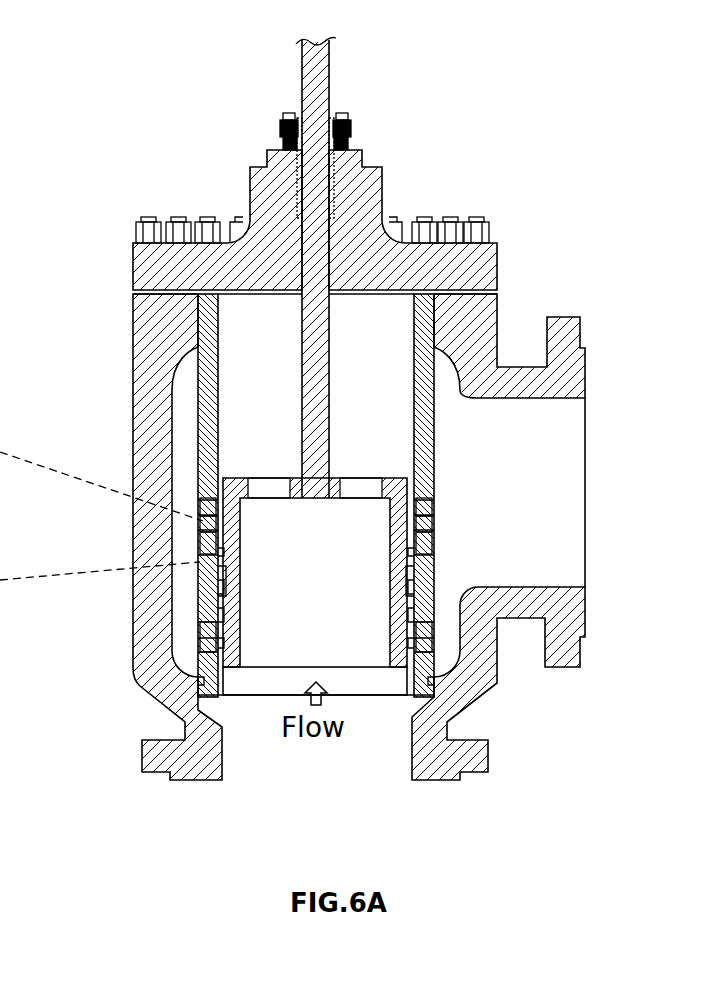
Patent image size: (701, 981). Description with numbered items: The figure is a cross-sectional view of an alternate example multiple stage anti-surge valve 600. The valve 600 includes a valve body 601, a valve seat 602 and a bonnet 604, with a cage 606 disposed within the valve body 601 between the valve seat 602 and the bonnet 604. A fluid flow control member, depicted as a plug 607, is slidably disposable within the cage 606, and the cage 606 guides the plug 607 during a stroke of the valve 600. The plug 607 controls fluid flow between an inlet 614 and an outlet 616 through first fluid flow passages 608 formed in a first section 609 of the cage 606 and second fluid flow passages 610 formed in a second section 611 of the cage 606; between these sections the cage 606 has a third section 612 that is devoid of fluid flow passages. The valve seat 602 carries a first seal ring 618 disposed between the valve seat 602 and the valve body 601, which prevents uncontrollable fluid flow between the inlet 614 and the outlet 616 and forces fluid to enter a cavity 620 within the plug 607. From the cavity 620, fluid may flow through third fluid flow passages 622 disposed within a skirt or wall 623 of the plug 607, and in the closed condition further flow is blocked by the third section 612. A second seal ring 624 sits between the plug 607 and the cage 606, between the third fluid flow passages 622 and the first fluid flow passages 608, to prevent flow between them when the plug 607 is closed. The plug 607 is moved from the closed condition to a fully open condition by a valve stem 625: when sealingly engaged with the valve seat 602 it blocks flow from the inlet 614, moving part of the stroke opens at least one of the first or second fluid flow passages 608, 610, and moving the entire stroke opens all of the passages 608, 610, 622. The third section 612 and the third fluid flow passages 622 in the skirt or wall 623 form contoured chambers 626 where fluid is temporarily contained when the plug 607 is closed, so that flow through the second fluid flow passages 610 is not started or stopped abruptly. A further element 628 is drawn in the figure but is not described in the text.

The multiple stage anti-surge valve 600 is at (546, 305).
The valve body 601 is at (477, 770).
The valve seat 602 is at (368, 685).
The bonnet 604 is at (498, 263).
The cage 606 is at (430, 577).
The plug 607 is at (337, 477).
The first fluid flow passages 608 is at (400, 640).
The first section 609 is at (137, 680).
The second fluid flow passages 610 is at (430, 518).
The second section 611 is at (200, 513).
The third section 612 is at (198, 572).
The inlet 614 is at (347, 770).
The outlet 616 is at (577, 573).
The first seal ring 618 is at (433, 686).
The cavity 620 is at (338, 601).
The third fluid flow passages 622 is at (200, 595).
The skirt or wall 623 is at (200, 647).
The second seal ring 624 is at (400, 617).
The valve stem 625 is at (318, 168).
The contoured chambers 626 is at (400, 587).
The backup ring 628 is at (430, 553).